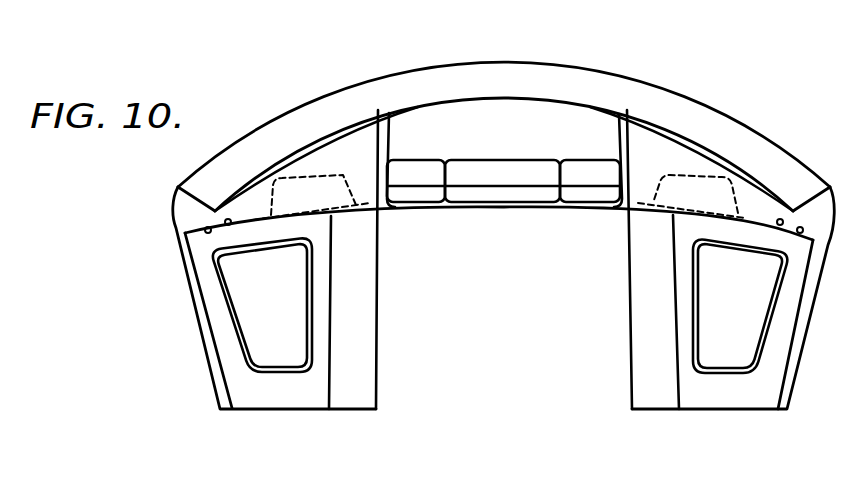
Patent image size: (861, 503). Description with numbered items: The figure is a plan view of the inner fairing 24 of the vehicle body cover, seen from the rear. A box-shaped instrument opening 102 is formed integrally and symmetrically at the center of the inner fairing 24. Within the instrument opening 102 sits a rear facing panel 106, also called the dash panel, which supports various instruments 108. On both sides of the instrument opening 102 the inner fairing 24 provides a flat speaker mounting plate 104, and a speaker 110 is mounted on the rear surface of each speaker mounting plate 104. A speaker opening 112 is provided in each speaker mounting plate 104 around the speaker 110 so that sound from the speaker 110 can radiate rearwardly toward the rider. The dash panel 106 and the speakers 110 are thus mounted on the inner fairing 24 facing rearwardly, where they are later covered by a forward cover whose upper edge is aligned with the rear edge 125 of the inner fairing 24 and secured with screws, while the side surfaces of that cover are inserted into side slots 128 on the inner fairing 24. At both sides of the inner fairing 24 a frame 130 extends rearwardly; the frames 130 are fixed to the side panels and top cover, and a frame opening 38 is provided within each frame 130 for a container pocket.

The inner fairing 24 is at (731, 83).
The rear edge of the inner fairing 125 is at (530, 90).
The instrument opening 102 is at (573, 127).
The speaker mounting plate 104 is at (343, 212).
The rear facing panel 106 is at (482, 219).
The instruments 108 is at (573, 160).
The speaker 110 is at (303, 174).
The speaker opening 112 is at (358, 203).
The side slot 128 is at (197, 228).
The frame 130 is at (232, 383).
The frame opening 38 is at (278, 355).